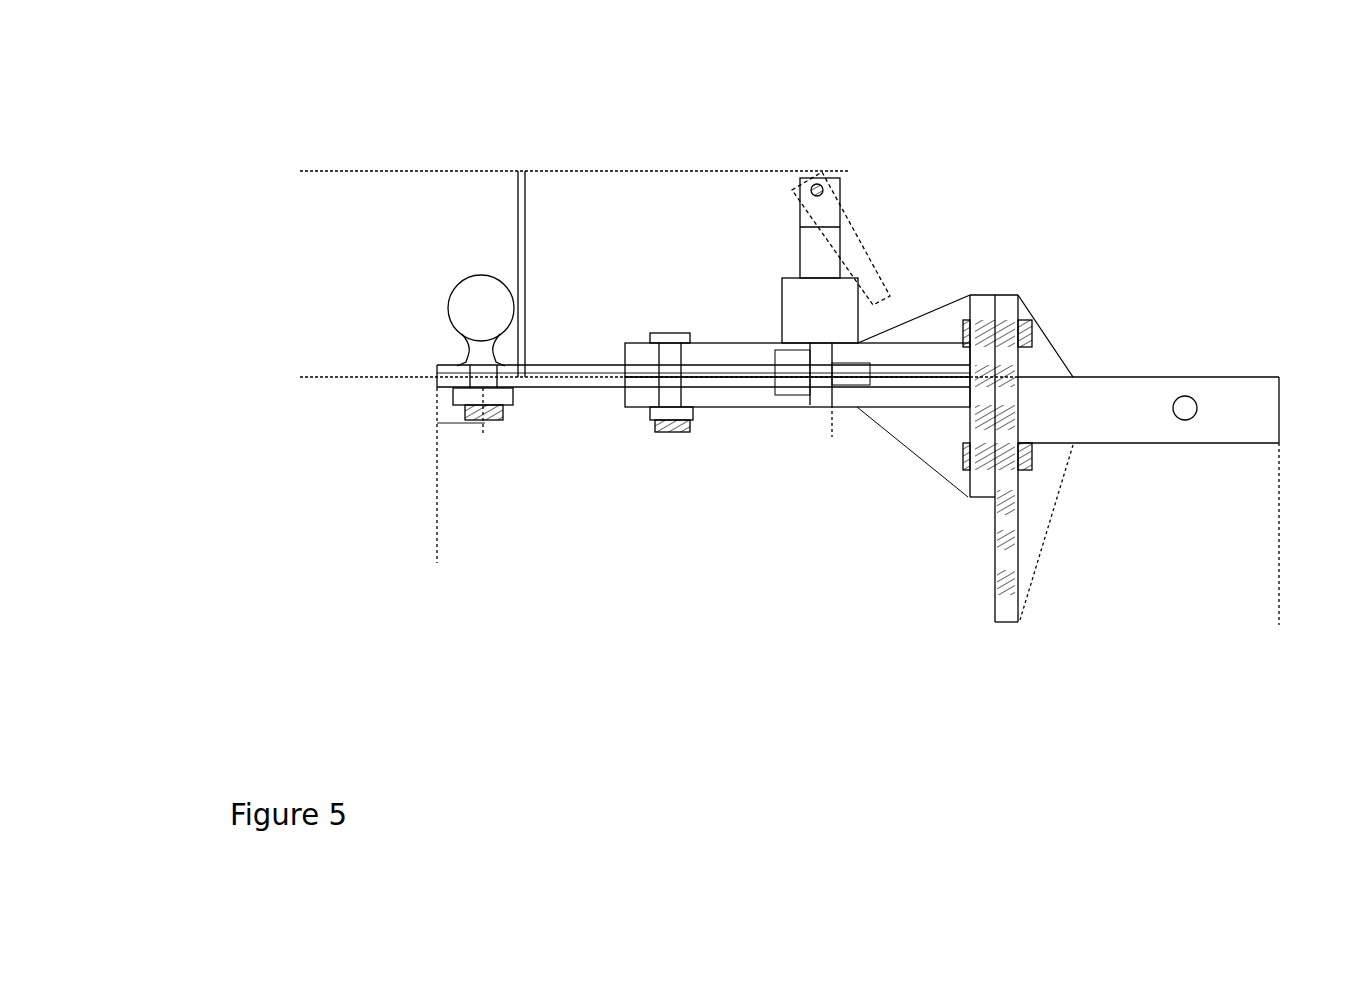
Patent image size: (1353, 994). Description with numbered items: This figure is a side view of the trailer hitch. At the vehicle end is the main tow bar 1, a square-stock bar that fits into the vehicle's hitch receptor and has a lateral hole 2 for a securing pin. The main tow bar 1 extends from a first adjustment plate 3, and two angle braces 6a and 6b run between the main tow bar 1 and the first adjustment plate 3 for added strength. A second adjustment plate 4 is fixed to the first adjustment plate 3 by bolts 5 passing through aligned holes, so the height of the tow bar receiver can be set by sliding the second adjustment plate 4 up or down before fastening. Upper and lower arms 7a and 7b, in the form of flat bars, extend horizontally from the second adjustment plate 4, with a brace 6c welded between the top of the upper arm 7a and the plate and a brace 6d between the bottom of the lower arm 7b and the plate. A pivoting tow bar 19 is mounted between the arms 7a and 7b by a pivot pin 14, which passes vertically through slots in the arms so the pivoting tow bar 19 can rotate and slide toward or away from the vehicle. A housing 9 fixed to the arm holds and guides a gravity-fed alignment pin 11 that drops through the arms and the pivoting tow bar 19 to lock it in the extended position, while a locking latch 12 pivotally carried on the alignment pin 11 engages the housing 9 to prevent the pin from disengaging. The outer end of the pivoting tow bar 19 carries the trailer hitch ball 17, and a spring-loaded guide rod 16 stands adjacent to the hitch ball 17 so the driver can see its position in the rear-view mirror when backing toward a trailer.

The main tow bar 1 is at (1200, 372).
The hole 2 is at (1187, 415).
The first adjustment plate 3 is at (995, 297).
The second adjustment plate 4 is at (1010, 265).
The bolts 5 is at (1035, 325).
The angle brace 6a is at (1053, 358).
The angle brace 6b is at (1059, 532).
The brace 6c is at (927, 328).
The brace 6d is at (923, 438).
The upper arm 7a is at (733, 355).
The lower arm 7b is at (735, 405).
The housing 9 is at (788, 302).
The alignment pin 11 is at (849, 223).
The locking latch 12 is at (863, 258).
The pivot pin 14 is at (668, 333).
The guide rod 16 is at (527, 237).
The trailer hitch ball 17 is at (462, 275).
The pivoting tow bar 19 is at (553, 385).